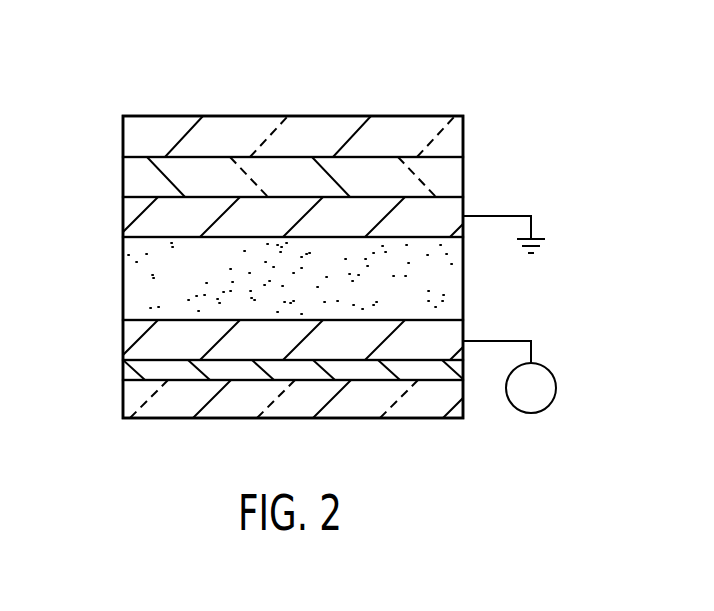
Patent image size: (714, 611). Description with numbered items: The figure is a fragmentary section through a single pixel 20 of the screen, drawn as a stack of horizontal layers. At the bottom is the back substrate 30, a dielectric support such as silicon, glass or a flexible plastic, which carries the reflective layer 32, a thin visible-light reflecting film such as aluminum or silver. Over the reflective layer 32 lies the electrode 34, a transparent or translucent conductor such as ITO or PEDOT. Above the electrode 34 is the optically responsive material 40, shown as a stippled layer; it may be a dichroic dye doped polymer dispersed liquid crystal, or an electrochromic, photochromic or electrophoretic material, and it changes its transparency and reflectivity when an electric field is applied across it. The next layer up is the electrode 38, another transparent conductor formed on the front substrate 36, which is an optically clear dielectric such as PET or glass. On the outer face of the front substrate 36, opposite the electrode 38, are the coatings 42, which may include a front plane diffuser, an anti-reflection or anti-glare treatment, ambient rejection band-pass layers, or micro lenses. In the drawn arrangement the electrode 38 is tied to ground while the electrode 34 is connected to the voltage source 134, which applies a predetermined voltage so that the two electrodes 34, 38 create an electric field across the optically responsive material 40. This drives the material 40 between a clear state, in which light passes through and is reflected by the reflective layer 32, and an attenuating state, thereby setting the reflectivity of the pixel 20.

The pixel 20 is at (139, 64).
The back substrate 30 is at (123, 400).
The reflective layer 32 is at (123, 370).
The electrode 34 is at (123, 341).
The front substrate 36 is at (123, 178).
The electrode 38 is at (123, 218).
The optically responsive material 40 is at (123, 278).
The coatings 42 is at (123, 140).
The voltage source 134 is at (556, 389).